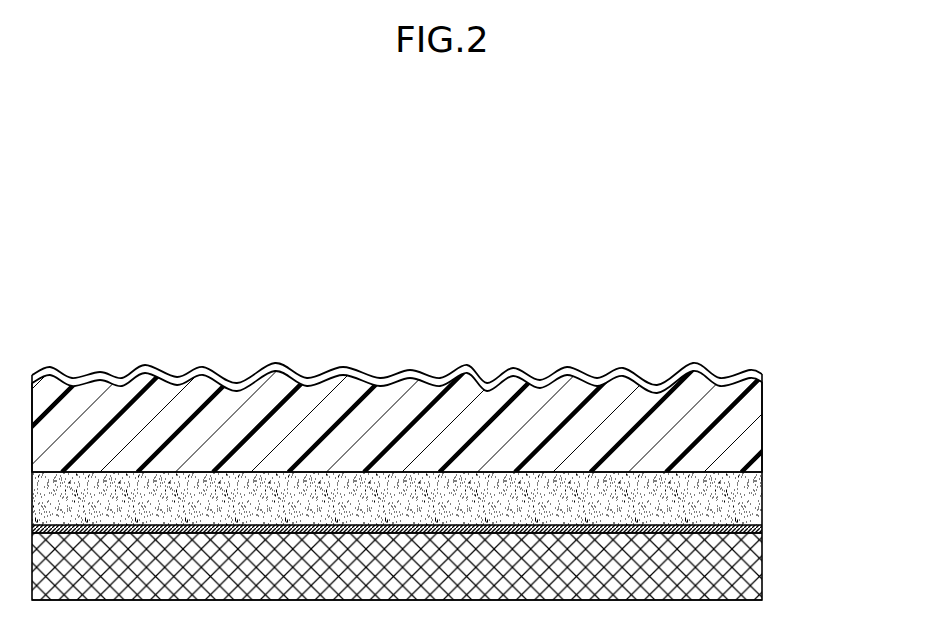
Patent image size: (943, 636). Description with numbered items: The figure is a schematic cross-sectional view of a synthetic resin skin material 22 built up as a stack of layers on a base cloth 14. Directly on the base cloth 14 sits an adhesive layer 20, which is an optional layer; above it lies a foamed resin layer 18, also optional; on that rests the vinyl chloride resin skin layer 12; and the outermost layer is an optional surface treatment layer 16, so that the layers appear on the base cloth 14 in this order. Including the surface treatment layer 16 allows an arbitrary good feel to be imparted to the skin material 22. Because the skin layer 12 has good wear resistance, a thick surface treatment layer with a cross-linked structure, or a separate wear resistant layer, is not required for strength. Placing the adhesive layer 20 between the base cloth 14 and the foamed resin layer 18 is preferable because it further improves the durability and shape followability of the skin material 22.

The skin material 22 is at (436, 302).
The surface treatment layer 16 is at (762, 377).
The vinyl chloride resin skin layer 12 is at (762, 428).
The foamed resin layer 18 is at (762, 495).
The adhesive layer 20 is at (762, 528).
The base cloth 14 is at (762, 568).